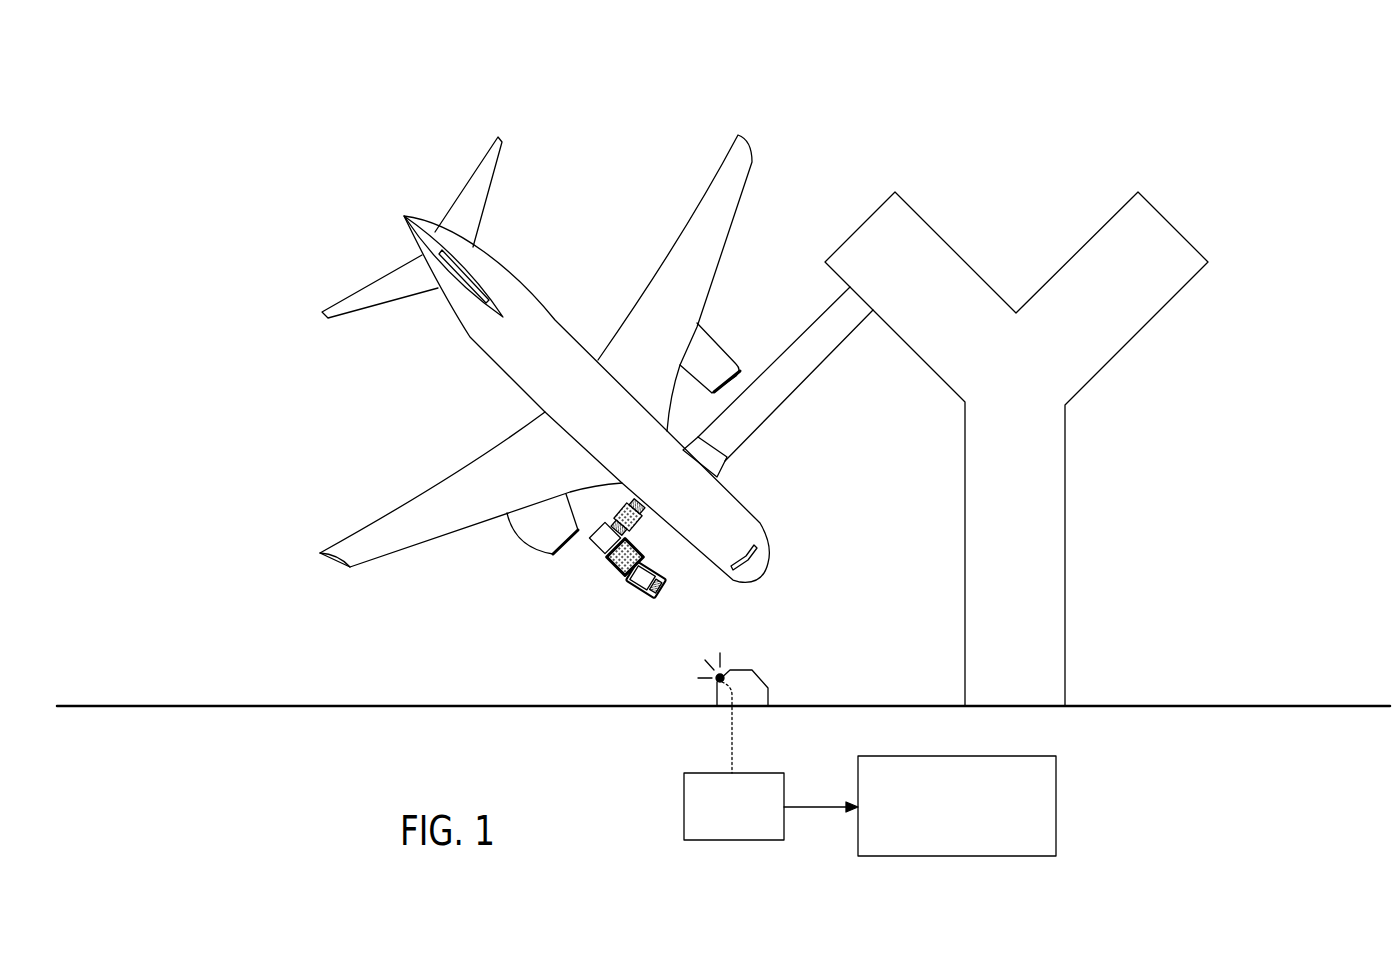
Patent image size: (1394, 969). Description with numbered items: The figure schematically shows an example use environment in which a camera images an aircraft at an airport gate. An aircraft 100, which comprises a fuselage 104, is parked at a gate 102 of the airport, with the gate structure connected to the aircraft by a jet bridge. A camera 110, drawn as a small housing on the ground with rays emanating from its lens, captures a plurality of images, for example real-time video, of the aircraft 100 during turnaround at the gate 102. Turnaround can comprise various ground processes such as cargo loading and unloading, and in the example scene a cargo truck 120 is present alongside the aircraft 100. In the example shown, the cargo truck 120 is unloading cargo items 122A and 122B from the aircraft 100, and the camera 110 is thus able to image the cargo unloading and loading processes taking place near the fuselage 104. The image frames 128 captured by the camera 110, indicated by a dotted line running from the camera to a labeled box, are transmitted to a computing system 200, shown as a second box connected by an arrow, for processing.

The aircraft 100 is at (594, 358).
The gate 102 is at (862, 70).
The fuselage 104 is at (557, 358).
The camera 110 is at (730, 656).
The cargo truck 120 is at (647, 597).
The cargo item 122A is at (618, 560).
The cargo item 122B is at (623, 508).
The image frames 128 is at (785, 773).
The computing system 200 is at (1012, 831).